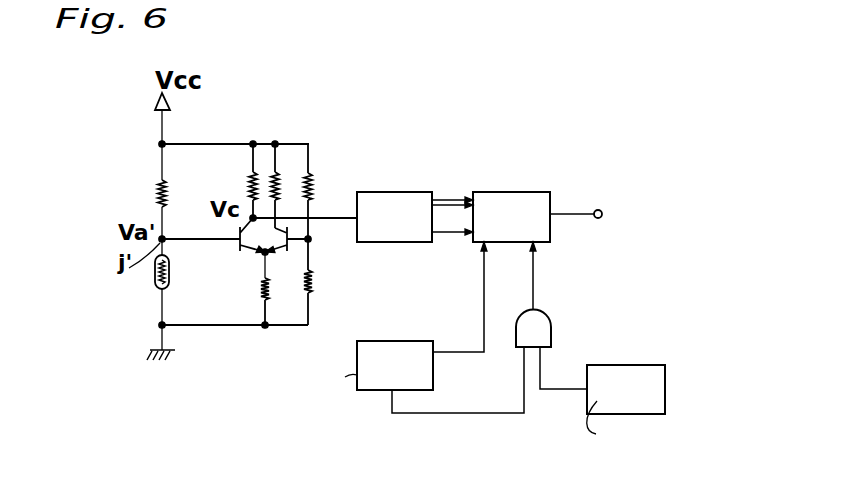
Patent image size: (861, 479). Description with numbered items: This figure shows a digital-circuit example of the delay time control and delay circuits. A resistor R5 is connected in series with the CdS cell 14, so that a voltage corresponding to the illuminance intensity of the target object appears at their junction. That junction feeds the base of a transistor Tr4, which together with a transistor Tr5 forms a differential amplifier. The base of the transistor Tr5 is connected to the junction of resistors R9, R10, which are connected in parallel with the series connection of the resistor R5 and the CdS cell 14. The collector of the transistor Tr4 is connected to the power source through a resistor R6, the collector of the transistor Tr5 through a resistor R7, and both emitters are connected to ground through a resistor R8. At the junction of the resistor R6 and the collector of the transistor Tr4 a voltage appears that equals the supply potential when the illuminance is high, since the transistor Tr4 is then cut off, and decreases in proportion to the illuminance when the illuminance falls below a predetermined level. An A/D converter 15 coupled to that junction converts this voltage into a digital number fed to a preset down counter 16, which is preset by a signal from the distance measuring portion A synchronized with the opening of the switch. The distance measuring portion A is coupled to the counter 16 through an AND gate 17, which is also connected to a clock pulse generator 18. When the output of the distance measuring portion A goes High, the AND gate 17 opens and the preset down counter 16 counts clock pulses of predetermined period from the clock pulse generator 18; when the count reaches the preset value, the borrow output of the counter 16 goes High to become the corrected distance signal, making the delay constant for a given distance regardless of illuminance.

The CdS cell 14 is at (156, 288).
The A/D converter 15 is at (399, 192).
The preset down counter 16 is at (516, 192).
The AND gate 17 is at (551, 330).
The clock pulse generator 18 is at (641, 367).
The distance measuring portion A is at (393, 348).
The resistor R5 is at (166, 208).
The resistor R6 is at (250, 187).
The resistor R7 is at (278, 183).
The resistor R8 is at (262, 291).
The resistor R9 is at (322, 178).
The resistor R10 is at (305, 286).
The transistor Tr4 is at (239, 251).
The transistor Tr5 is at (293, 245).